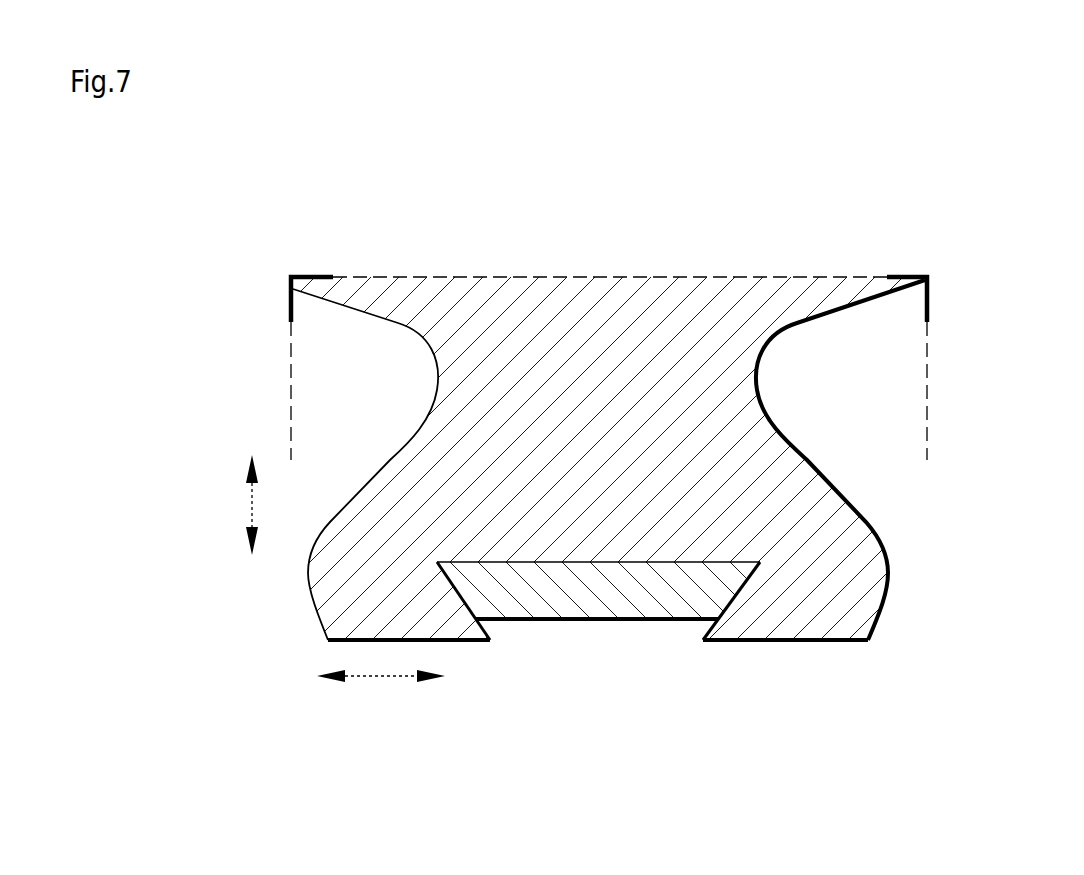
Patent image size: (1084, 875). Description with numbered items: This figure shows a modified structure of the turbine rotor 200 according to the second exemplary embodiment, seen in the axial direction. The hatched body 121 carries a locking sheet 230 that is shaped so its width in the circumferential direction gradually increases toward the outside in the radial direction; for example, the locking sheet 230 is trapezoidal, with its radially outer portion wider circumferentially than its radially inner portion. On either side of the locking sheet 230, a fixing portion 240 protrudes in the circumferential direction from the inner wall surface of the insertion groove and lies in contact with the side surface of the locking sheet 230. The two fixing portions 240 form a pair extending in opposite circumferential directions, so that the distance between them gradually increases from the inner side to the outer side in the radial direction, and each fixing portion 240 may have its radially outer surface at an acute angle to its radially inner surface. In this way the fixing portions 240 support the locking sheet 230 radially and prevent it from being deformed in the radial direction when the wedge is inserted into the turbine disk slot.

The turbine rotor 200 is at (157, 190).
The body portion 121 is at (653, 316).
The locking sheet 230 is at (603, 594).
The fixing portion 240 is at (452, 603).